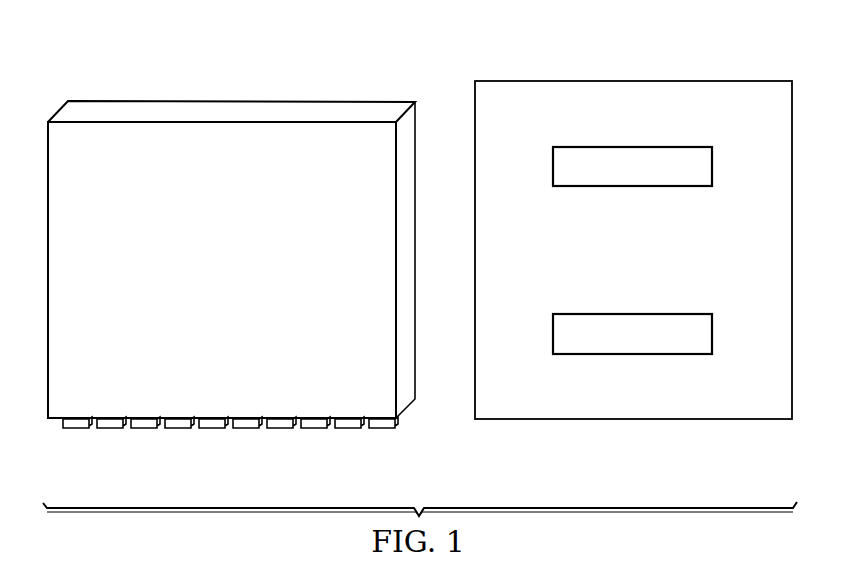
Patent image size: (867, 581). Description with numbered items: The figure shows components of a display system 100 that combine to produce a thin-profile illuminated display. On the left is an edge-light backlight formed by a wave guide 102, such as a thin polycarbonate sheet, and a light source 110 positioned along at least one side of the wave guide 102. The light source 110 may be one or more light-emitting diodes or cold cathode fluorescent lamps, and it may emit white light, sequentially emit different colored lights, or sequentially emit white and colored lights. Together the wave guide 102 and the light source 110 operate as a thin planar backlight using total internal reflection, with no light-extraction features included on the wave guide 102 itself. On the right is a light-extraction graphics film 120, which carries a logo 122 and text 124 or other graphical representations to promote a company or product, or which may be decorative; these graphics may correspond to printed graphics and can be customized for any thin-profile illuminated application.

The display system 100 is at (132, 69).
The wave guide 102 is at (53, 420).
The light source 110 is at (108, 429).
The light-extraction graphics film 120 is at (712, 80).
The logo 122 is at (634, 146).
The text 124 is at (633, 356).